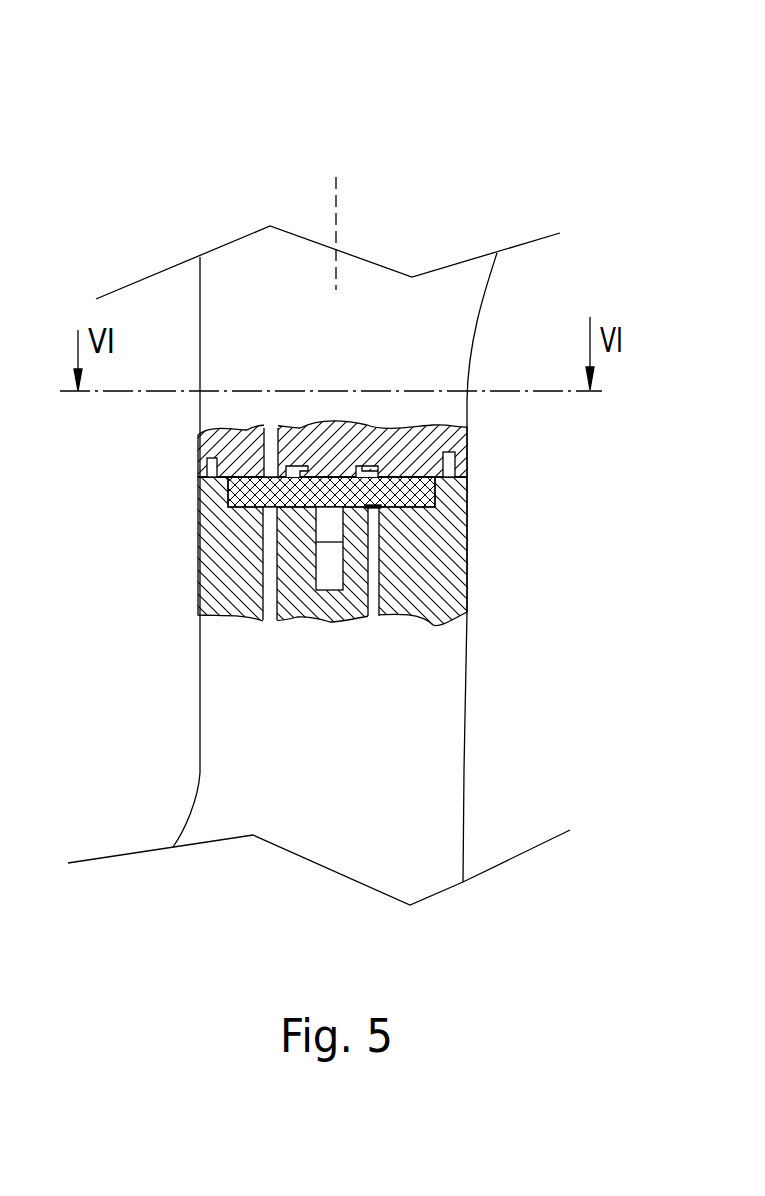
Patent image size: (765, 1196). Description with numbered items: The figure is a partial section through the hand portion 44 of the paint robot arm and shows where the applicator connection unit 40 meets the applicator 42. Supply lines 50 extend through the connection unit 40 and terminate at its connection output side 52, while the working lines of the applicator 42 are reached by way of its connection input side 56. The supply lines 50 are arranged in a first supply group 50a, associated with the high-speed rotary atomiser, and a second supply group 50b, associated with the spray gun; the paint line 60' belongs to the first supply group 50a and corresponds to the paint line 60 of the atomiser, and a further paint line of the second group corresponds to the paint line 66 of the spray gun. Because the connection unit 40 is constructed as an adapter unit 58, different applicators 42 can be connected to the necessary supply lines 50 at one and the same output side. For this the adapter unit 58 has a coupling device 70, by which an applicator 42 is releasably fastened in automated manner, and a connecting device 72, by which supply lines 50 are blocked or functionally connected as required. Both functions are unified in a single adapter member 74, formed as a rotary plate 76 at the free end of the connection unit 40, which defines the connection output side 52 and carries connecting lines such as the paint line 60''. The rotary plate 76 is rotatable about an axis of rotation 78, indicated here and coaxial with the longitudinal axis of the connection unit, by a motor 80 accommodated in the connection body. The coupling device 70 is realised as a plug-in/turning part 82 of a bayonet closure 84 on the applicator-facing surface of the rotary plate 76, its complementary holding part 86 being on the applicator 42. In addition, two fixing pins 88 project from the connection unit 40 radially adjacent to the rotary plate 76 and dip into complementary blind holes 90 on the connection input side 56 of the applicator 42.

The applicator connection unit 40 is at (447, 596).
The applicator 42 is at (487, 442).
The hand portion 44 is at (103, 125).
The supply lines 50 is at (250, 655).
The first supply group 50a is at (232, 642).
The second supply group 50b is at (352, 647).
The connection output side 52 is at (248, 460).
The connection input side 56 is at (437, 523).
The adapter unit 58 is at (170, 491).
The paint line 60 is at (263, 619).
The paint line 60' is at (265, 409).
The paint line 60'' is at (182, 563).
The paint line 66 is at (377, 607).
The coupling device 70 is at (414, 452).
The connecting device 72 is at (252, 450).
The adapter member 74 is at (402, 563).
The rotary plate 76 is at (393, 530).
The axis of rotation 78 is at (336, 212).
The motor 80 is at (325, 580).
The plug-in/turning part 82 is at (310, 463).
The bayonet closure 84 is at (348, 452).
The holding part 86 is at (378, 463).
The fixing pins 88 is at (447, 456).
The blind holes 90 is at (467, 490).